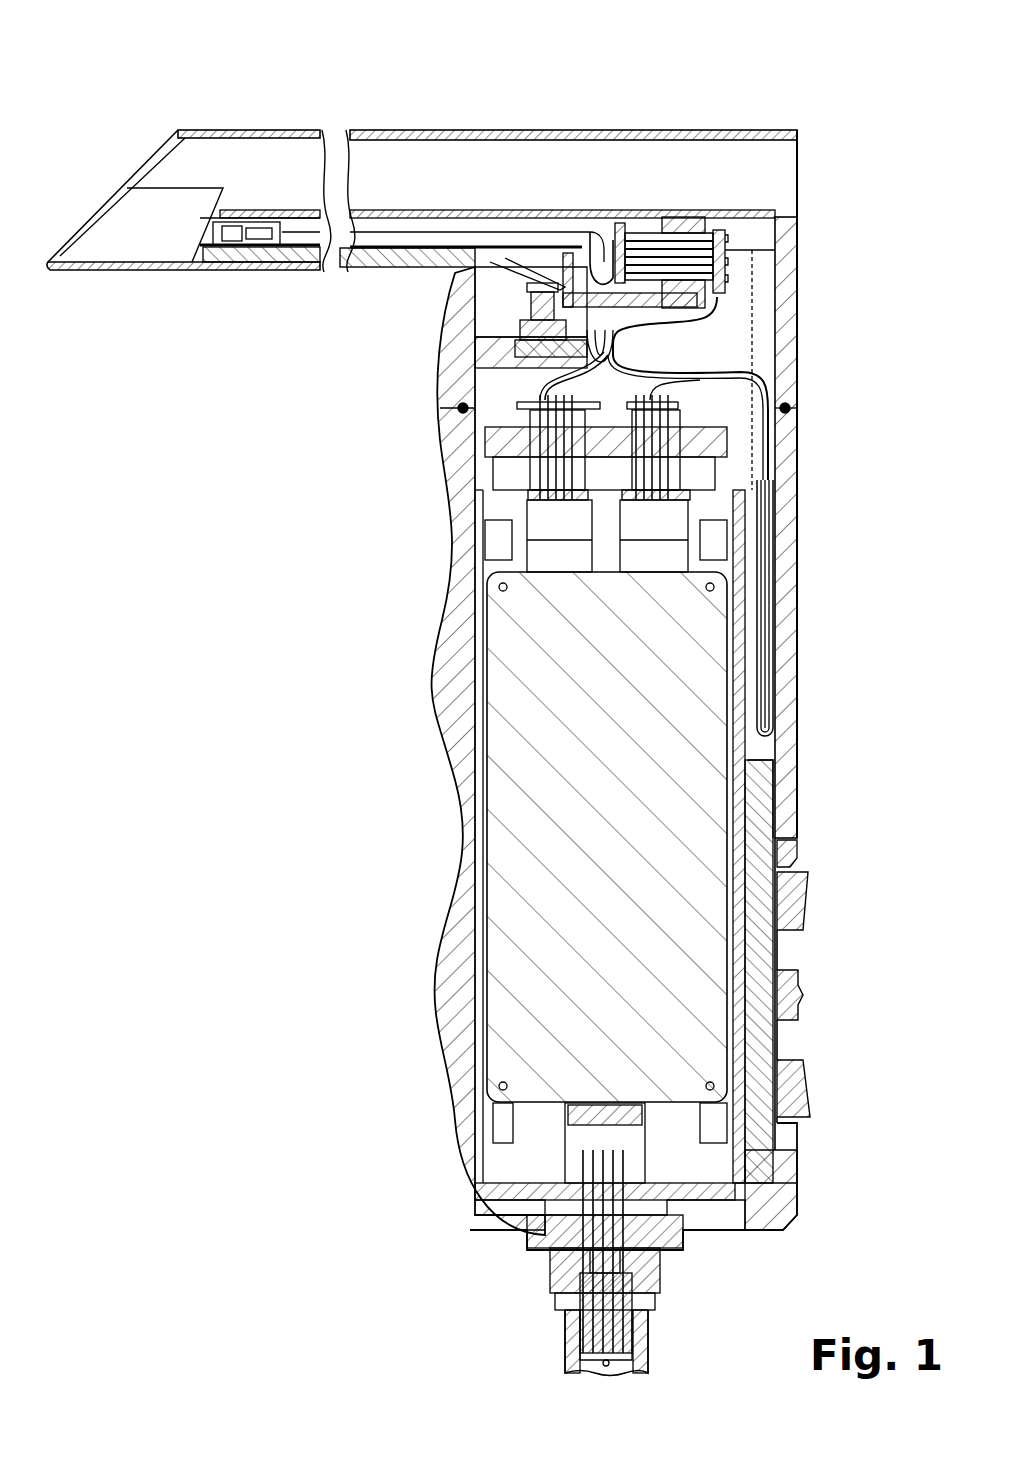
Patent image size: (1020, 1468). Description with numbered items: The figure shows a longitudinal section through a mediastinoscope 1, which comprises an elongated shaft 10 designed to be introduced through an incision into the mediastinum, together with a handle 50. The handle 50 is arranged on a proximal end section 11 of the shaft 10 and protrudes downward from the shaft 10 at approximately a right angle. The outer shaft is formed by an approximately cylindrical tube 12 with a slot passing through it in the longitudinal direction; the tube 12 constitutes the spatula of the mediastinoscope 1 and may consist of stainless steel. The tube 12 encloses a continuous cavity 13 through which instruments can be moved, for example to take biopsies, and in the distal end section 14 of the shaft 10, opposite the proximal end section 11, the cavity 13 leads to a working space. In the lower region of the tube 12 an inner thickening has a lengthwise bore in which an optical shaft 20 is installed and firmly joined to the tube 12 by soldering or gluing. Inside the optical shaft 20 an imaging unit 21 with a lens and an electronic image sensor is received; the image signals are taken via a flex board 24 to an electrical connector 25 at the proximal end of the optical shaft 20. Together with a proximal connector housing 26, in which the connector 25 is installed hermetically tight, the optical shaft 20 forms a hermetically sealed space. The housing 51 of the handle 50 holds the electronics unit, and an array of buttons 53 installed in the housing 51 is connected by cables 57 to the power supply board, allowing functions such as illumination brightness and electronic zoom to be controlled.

The mediastinoscope 1 is at (853, 100).
The shaft 10 is at (552, 106).
The proximal end section 11 is at (714, 130).
The tube 12 is at (440, 128).
The cavity 13 is at (453, 185).
The distal end section 14 is at (222, 130).
The optical shaft 20 is at (375, 270).
The imaging unit 21 is at (228, 262).
The flex board 24 is at (598, 262).
The electrical connector 25 is at (668, 218).
The connector housing 26 is at (693, 303).
The handle 50 is at (824, 1144).
The housing 51 is at (783, 768).
The buttons 53 is at (793, 900).
The cables 57 is at (772, 488).